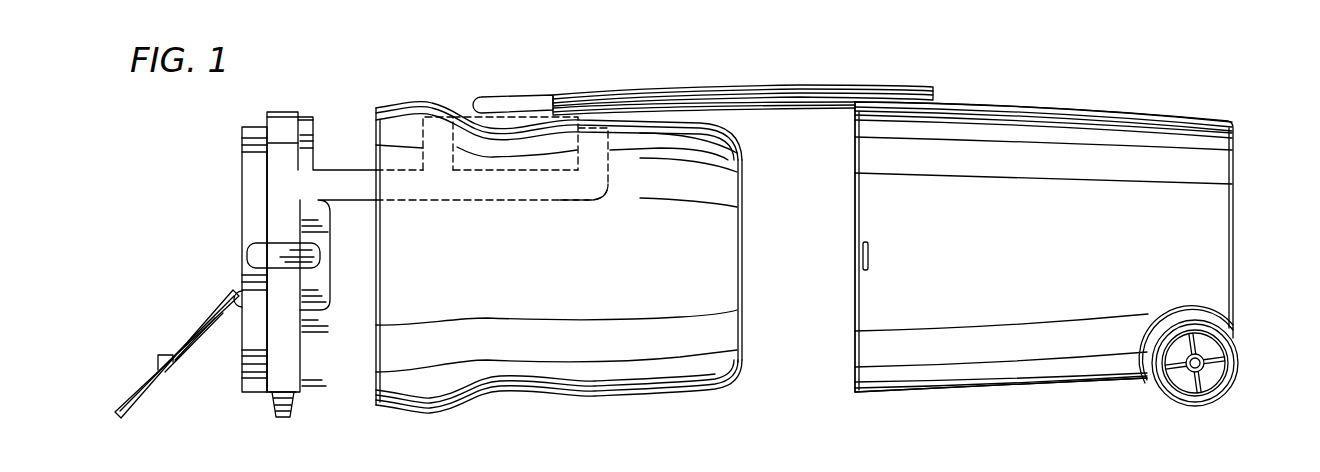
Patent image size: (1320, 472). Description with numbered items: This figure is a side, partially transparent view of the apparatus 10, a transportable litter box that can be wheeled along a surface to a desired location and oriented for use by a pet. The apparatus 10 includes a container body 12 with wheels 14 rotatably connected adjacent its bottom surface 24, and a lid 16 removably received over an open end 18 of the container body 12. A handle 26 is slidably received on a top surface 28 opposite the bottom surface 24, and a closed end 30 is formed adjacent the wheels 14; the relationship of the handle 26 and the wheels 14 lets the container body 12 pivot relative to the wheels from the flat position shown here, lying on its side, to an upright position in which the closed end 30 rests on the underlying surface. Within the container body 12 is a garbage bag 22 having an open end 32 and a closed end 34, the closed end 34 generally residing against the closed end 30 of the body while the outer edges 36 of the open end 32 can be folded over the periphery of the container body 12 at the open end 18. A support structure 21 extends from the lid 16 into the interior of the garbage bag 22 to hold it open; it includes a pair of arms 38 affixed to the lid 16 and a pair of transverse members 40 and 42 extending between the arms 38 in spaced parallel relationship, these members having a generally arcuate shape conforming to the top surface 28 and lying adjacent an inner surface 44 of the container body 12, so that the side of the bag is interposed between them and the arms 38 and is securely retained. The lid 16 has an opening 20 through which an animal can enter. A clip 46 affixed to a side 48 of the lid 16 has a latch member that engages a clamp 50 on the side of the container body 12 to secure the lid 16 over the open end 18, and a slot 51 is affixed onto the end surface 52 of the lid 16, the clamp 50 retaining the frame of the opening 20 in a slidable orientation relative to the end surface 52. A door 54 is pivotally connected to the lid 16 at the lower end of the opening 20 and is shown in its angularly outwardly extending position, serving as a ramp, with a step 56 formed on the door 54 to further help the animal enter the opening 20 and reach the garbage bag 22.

The apparatus 10 is at (1220, 100).
The container body 12 is at (1117, 132).
The wheels 14 is at (1168, 390).
The lid 16 is at (290, 112).
The open end 18 is at (855, 310).
The opening 20 is at (242, 260).
The support structure 21 is at (563, 197).
The garbage bag 22 is at (432, 103).
The bottom surface 24 is at (1000, 388).
The handle 26 is at (937, 88).
The top surface 28 is at (1027, 107).
The closed end 30 is at (1233, 302).
The open end 32 is at (376, 358).
The closed end 34 is at (737, 267).
The outer edges 36 is at (376, 405).
The arms 38 is at (460, 197).
The transverse member 40 is at (420, 145).
The transverse member 42 is at (597, 147).
The inner surface 44 is at (995, 115).
The clip 46 is at (256, 252).
The side 48 is at (287, 307).
The clamp 50 is at (252, 130).
The slot 51 is at (868, 252).
The end surface 52 is at (267, 210).
The door 54 is at (158, 388).
The step 56 is at (172, 355).